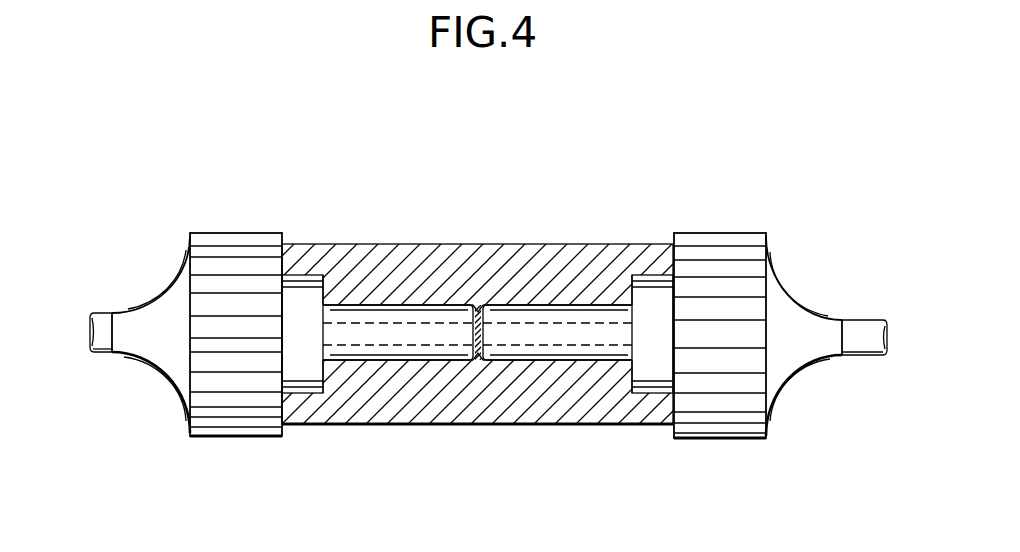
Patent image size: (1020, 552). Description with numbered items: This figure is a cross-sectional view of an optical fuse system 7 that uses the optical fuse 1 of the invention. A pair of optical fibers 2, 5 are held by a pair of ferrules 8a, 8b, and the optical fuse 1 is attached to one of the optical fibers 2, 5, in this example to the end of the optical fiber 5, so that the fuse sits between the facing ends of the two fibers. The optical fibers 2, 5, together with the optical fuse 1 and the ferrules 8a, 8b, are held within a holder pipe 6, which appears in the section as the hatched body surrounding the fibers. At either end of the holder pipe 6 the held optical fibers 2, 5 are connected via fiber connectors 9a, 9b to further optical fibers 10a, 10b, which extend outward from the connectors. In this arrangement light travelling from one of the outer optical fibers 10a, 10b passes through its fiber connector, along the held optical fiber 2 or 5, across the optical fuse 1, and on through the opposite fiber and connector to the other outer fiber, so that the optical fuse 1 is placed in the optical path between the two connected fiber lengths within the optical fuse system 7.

The optical fuse 1 is at (478, 302).
The optical fiber 2 is at (572, 346).
The optical fiber 5 is at (392, 346).
The holder pipe 6 is at (567, 244).
The roller 7 is at (383, 238).
The ferrule 8a is at (520, 358).
The ferrule 8b is at (440, 356).
The fiber connector 9a is at (843, 452).
The fiber connector 9b is at (323, 448).
The optical fiber 10a is at (858, 328).
The optical fiber 10b is at (103, 325).